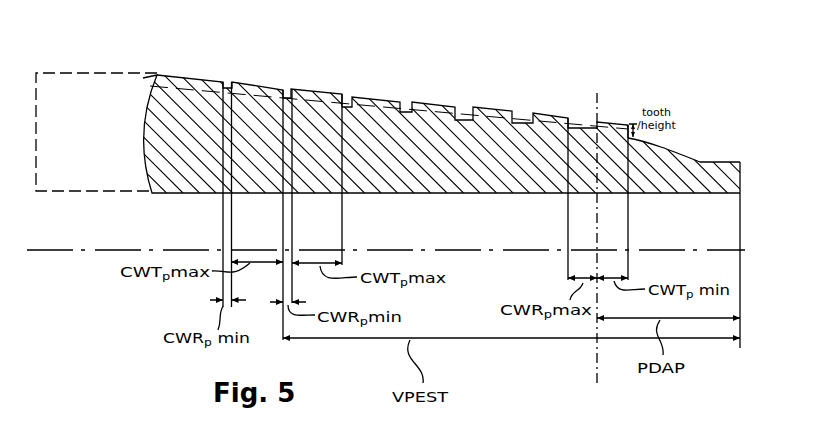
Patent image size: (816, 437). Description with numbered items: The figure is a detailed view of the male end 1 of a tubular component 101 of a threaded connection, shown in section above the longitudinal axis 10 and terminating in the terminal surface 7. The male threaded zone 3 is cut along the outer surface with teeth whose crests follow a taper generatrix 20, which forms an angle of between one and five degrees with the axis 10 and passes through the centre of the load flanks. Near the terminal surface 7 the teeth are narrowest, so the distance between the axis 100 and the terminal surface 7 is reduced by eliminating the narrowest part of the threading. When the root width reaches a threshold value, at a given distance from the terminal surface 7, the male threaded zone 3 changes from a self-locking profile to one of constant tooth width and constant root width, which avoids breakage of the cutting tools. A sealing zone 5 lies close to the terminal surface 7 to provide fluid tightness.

The male end 1 is at (199, 110).
The tubular component 101 is at (103, 105).
The male threaded zone 3 is at (432, 88).
The taper generatrix 20 is at (492, 110).
The axis 100 is at (597, 104).
The axis 10 is at (188, 250).
The sealing zone 5 is at (693, 153).
The terminal surface 7 is at (742, 178).